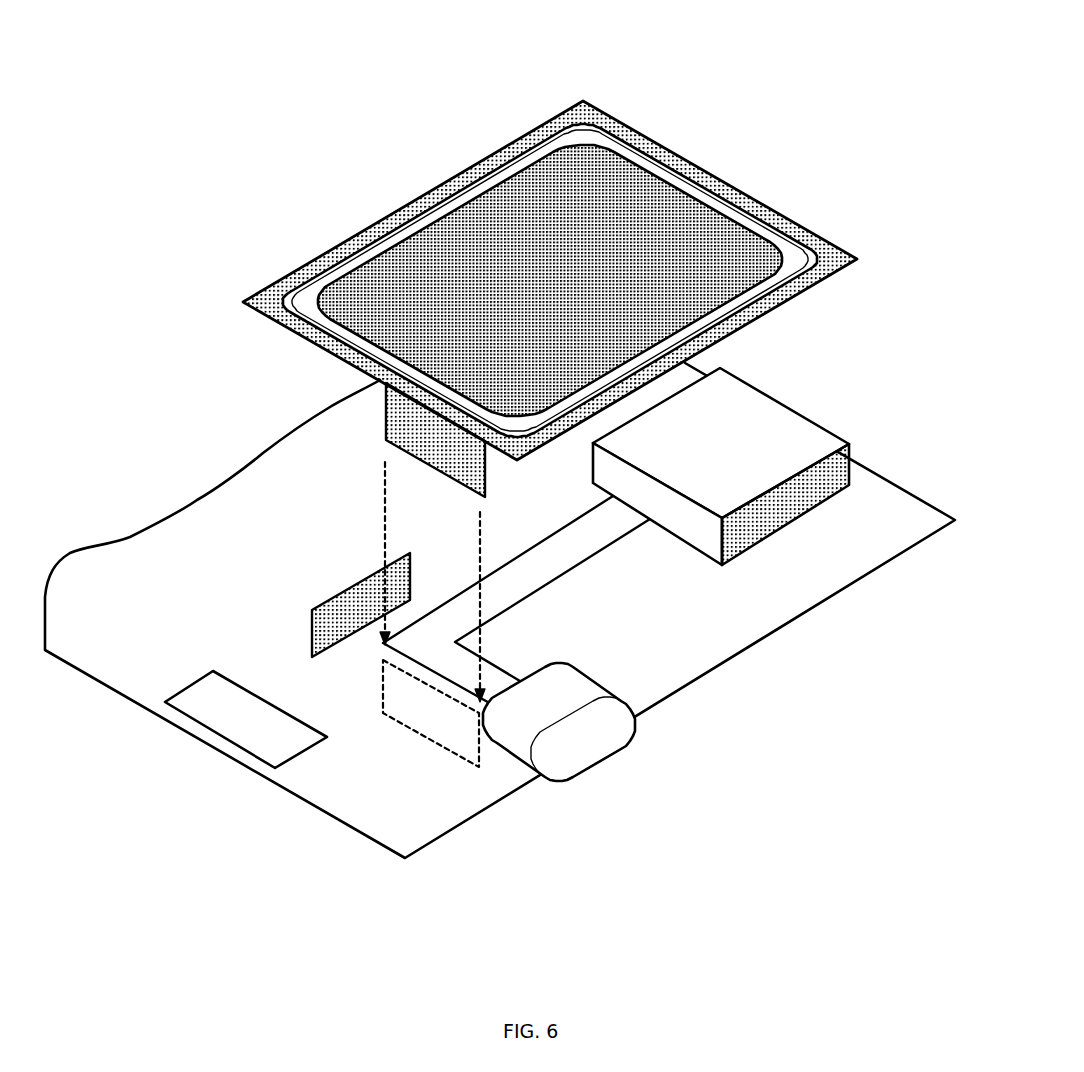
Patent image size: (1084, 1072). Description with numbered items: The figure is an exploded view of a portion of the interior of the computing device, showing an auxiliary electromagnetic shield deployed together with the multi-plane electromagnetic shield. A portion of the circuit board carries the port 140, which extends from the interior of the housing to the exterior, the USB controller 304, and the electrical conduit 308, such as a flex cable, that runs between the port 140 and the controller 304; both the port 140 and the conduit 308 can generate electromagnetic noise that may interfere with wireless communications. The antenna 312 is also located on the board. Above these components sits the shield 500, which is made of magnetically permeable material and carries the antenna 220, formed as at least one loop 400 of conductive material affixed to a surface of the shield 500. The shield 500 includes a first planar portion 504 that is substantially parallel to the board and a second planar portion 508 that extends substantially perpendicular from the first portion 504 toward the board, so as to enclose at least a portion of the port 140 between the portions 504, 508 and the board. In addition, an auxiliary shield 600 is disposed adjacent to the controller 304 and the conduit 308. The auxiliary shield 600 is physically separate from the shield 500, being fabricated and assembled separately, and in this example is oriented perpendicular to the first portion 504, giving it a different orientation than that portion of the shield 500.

The port 140 is at (590, 748).
The antenna 220 is at (818, 249).
The USB controller 304 is at (763, 410).
The electrical conduit 308 is at (542, 560).
The antenna 312 is at (238, 737).
The loop 400 is at (553, 247).
The shield 500 is at (683, 249).
The first planar portion 504 is at (582, 117).
The second planar portion 508 is at (386, 420).
The auxiliary shield 600 is at (337, 593).